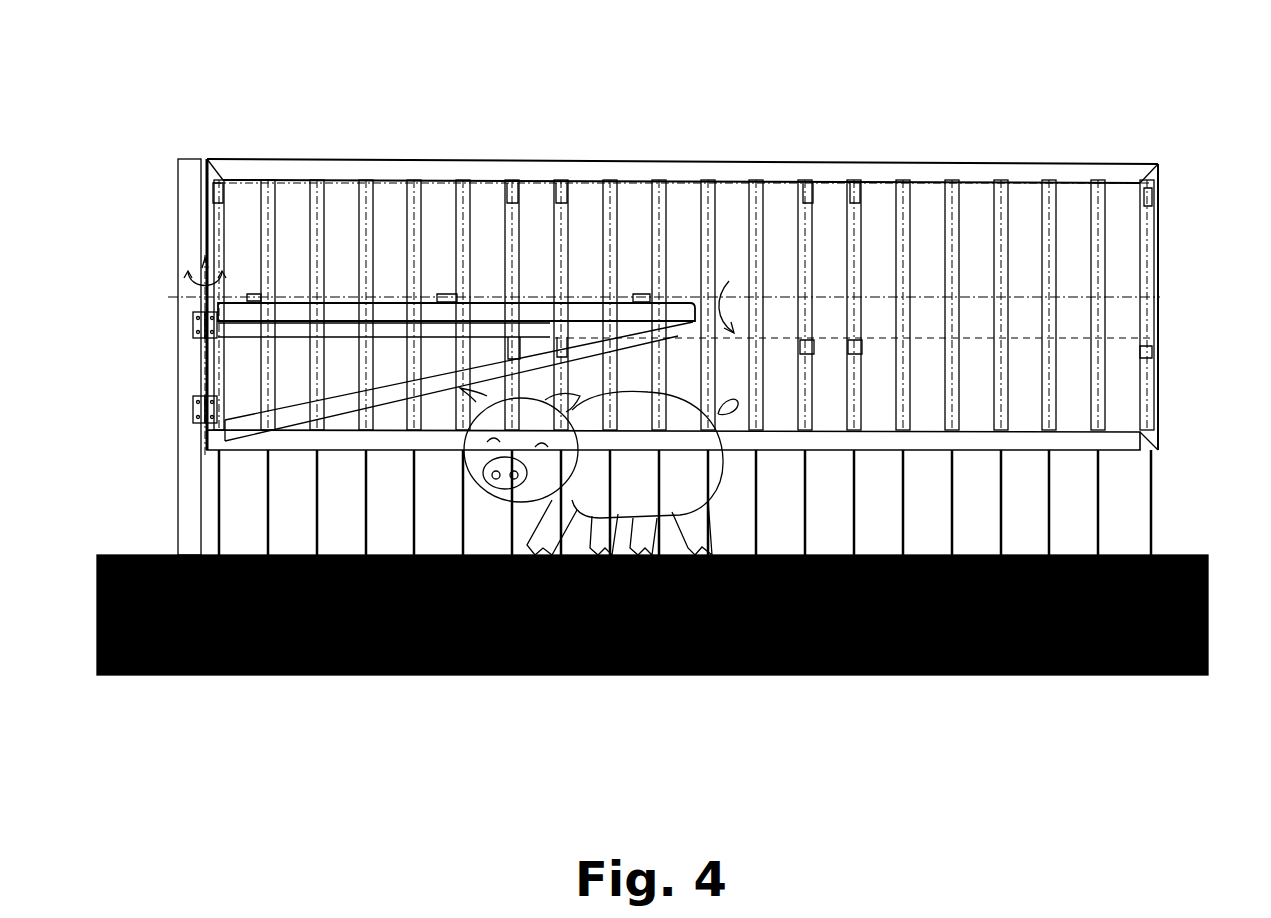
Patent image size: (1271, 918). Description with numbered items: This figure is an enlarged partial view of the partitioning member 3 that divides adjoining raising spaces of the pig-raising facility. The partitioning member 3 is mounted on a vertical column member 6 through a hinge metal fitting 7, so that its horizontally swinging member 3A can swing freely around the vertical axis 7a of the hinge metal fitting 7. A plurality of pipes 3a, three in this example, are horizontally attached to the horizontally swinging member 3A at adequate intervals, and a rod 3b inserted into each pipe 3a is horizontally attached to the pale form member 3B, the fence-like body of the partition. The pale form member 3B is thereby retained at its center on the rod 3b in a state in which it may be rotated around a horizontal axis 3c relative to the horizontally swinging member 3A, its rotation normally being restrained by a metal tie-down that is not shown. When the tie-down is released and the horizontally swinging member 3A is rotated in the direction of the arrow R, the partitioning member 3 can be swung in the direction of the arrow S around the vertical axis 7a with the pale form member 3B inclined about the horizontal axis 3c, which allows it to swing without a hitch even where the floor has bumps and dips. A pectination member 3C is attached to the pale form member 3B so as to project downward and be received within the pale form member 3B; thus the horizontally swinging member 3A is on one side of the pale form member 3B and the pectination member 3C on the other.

The partitioning member 3 is at (664, 277).
The pipe 3a is at (445, 296).
The rod 3b is at (456, 292).
The horizontally swinging member 3A is at (533, 303).
The pale form member 3B is at (742, 170).
The horizontal axis 3c is at (776, 296).
The pectination member 3C is at (1156, 500).
The arrow S is at (190, 278).
The hinge metal fitting 7 is at (193, 326).
The column member 6 is at (190, 373).
The vertical axis 7a is at (203, 435).
The arrow R is at (729, 336).